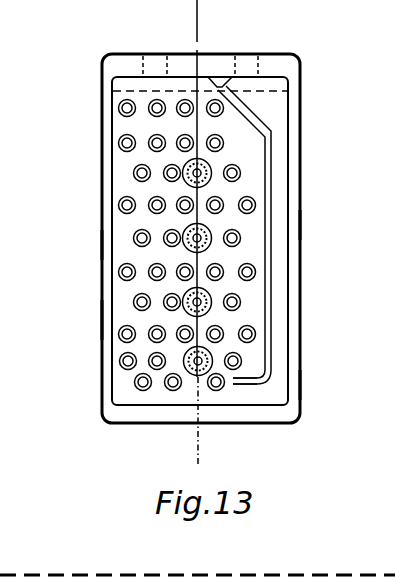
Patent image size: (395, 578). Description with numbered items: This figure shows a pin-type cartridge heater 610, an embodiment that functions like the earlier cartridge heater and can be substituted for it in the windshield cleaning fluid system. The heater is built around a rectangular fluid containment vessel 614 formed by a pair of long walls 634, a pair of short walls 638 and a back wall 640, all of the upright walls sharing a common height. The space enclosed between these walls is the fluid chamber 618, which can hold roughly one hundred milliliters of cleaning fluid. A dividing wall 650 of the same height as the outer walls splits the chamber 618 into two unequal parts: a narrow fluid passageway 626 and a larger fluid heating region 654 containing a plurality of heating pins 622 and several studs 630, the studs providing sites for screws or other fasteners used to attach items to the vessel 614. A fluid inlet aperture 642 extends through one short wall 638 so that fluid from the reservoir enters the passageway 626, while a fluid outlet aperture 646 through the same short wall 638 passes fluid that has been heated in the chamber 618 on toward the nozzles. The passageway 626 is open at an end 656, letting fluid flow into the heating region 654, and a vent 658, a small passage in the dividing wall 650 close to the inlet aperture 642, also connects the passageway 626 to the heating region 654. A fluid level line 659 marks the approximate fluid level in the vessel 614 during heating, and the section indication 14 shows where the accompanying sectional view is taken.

The section line 14- 14 is at (158, 18).
The pin-type cartridge heater 610 is at (103, 423).
The fluid containment vessel 614 is at (102, 243).
The fluid chamber 618 is at (120, 289).
The heating pins 622 is at (136, 166).
The fluid passageway 626 is at (282, 122).
The studs 630 is at (191, 182).
The long walls 634 is at (298, 228).
The short walls 638 is at (113, 63).
The back wall 640 is at (303, 383).
The fluid inlet aperture 642 is at (244, 63).
The fluid outlet aperture 646 is at (154, 63).
The dividing wall 650 is at (269, 188).
The fluid heating region 654 is at (248, 247).
The open end 656 is at (239, 392).
The vent 658 is at (226, 87).
The fluid level line 659 is at (112, 94).